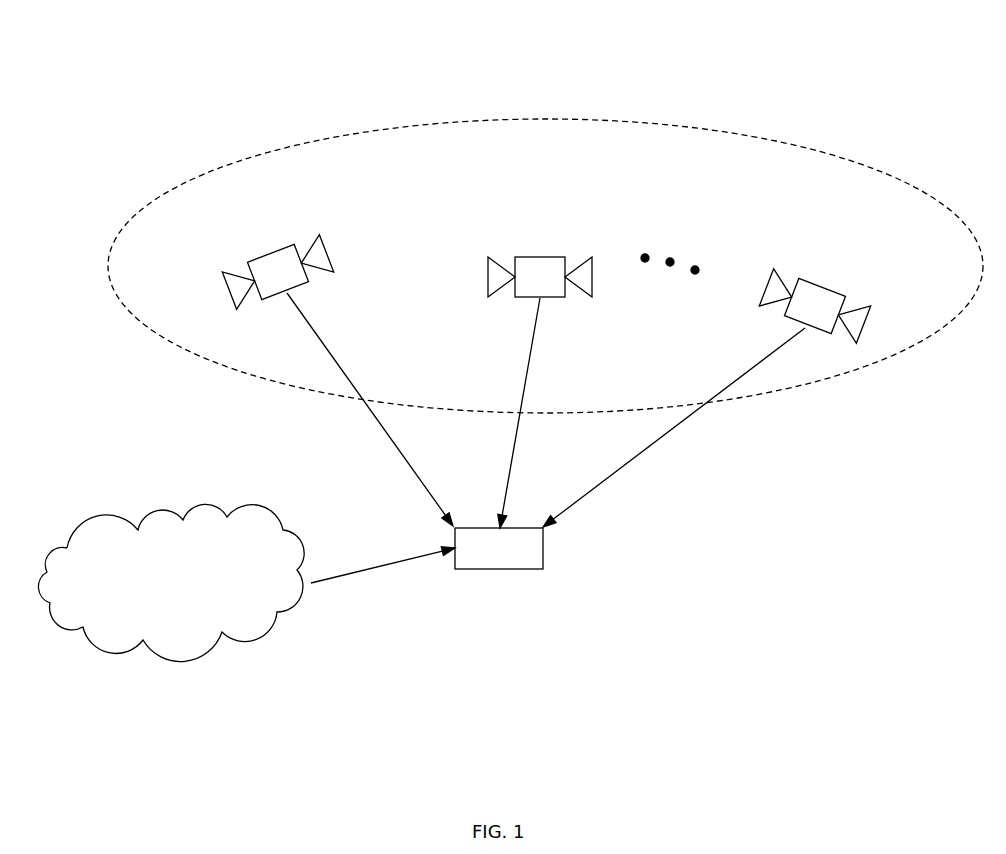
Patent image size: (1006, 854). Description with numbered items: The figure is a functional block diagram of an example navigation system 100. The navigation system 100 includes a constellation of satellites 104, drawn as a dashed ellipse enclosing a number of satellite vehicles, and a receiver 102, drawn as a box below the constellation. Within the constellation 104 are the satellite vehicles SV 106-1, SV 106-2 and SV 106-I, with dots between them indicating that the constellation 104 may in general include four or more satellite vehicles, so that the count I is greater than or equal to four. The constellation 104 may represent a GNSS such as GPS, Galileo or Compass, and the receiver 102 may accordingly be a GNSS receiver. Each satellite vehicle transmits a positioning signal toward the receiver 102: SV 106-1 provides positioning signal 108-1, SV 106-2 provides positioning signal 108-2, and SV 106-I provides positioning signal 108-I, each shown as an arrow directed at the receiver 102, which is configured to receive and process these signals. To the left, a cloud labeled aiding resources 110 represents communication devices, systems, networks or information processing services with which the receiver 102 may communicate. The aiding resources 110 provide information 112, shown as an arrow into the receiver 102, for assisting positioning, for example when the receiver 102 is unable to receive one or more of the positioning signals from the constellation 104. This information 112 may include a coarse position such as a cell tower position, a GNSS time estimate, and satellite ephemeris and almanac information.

The navigation system 100 is at (567, 37).
The receiver 102 is at (543, 548).
The constellation of satellites 104 is at (237, 163).
The satellite vehicle 106-1 is at (270, 250).
The satellite vehicle 106-2 is at (540, 257).
The satellite vehicle 106-I is at (823, 285).
The positioning signal 108-1 is at (328, 343).
The positioning signal 108-2 is at (527, 372).
The positioning signal 108-I is at (677, 427).
The aiding resources 110 is at (175, 515).
The information 112 is at (382, 568).